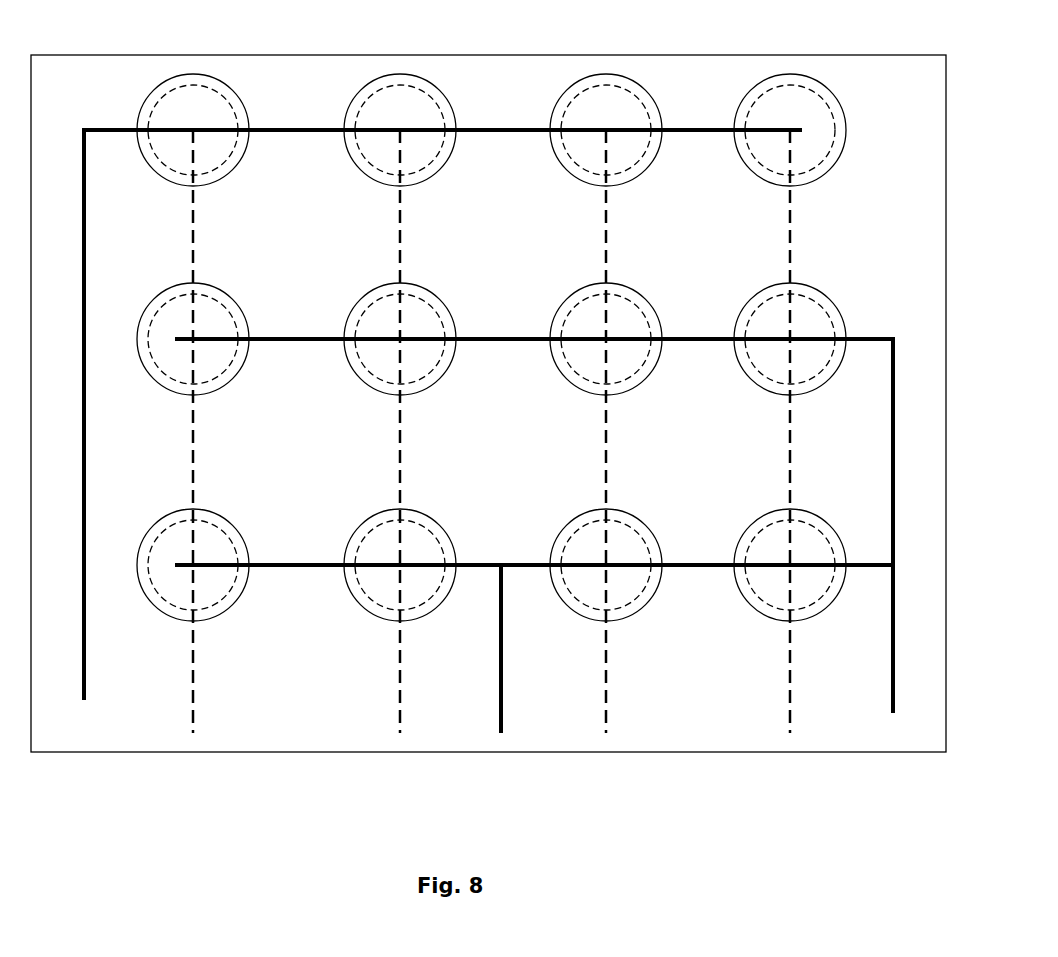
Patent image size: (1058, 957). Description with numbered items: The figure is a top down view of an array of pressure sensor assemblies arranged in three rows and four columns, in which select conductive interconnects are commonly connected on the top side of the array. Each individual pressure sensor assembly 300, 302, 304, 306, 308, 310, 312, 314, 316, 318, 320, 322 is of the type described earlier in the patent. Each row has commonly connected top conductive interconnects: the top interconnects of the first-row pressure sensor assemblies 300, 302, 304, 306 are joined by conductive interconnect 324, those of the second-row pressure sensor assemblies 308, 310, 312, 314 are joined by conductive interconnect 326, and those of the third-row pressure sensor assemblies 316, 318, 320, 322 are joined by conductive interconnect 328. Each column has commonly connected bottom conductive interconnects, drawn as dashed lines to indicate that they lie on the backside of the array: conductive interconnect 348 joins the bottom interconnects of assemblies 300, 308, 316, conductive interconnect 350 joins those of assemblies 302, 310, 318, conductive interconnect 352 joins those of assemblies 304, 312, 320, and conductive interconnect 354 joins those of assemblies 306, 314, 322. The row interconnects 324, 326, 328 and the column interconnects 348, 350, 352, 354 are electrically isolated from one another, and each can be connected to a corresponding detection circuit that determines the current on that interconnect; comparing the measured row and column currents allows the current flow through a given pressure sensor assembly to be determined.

The pressure sensor assembly 300 is at (152, 80).
The pressure sensor assembly 302 is at (359, 80).
The pressure sensor assembly 304 is at (565, 80).
The pressure sensor assembly 306 is at (749, 80).
The pressure sensor assembly 308 is at (152, 289).
The pressure sensor assembly 310 is at (359, 289).
The pressure sensor assembly 312 is at (565, 289).
The pressure sensor assembly 314 is at (749, 289).
The pressure sensor assembly 316 is at (152, 515).
The pressure sensor assembly 318 is at (359, 515).
The pressure sensor assembly 320 is at (565, 515).
The pressure sensor assembly 322 is at (749, 515).
The conductive interconnect 324 is at (291, 127).
The conductive interconnect 326 is at (291, 337).
The conductive interconnect 328 is at (291, 563).
The conductive interconnect 348 is at (193, 218).
The conductive interconnect 350 is at (400, 218).
The conductive interconnect 352 is at (606, 218).
The conductive interconnect 354 is at (790, 218).